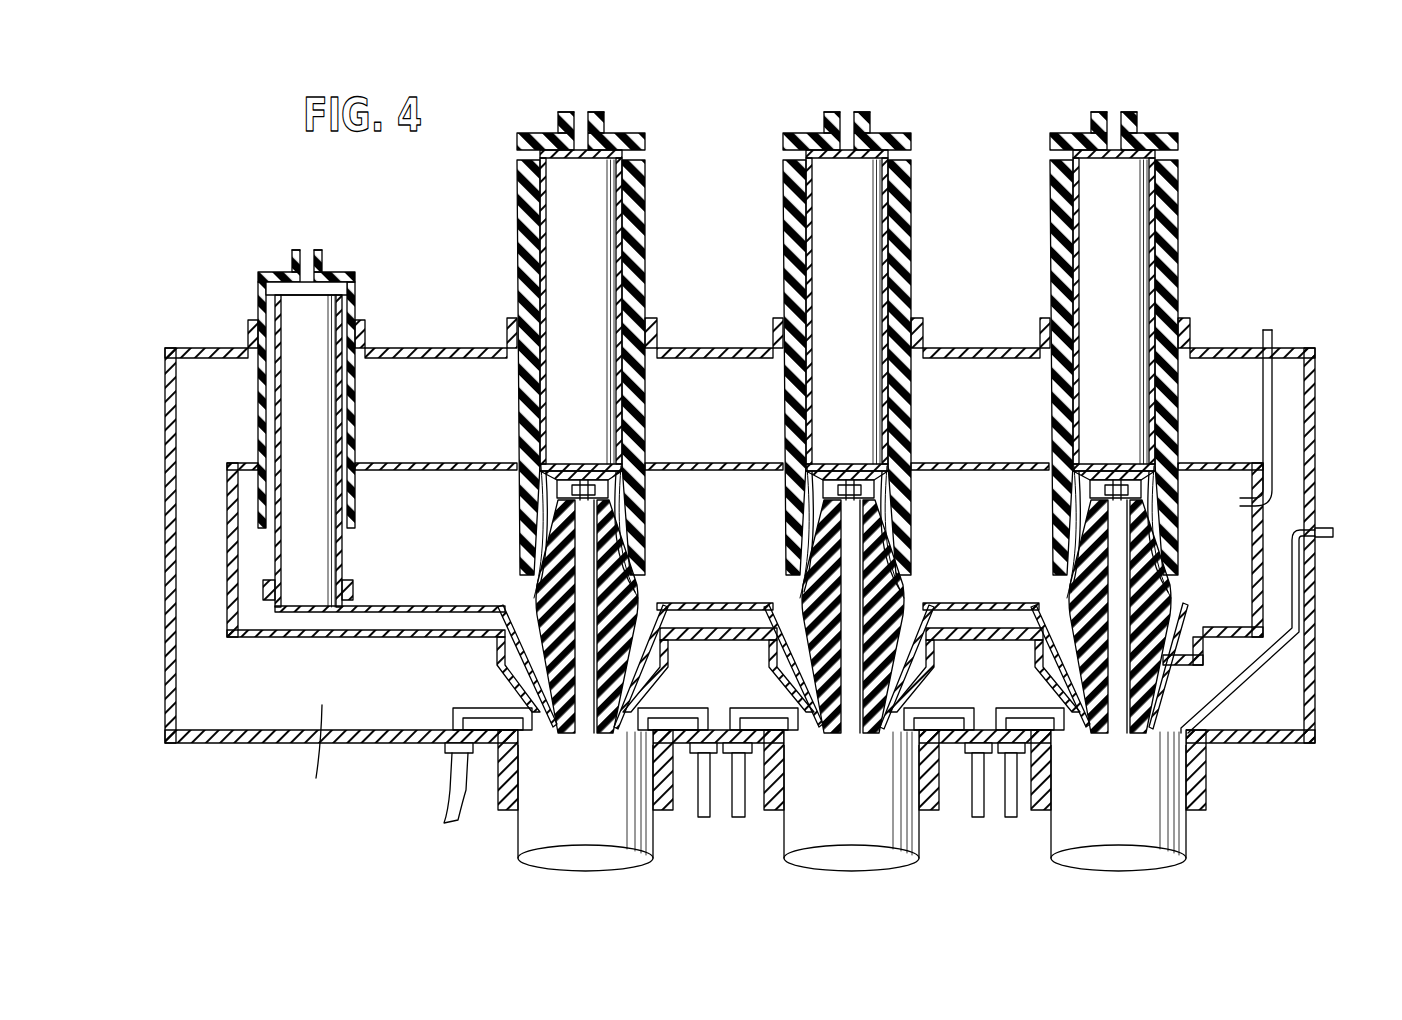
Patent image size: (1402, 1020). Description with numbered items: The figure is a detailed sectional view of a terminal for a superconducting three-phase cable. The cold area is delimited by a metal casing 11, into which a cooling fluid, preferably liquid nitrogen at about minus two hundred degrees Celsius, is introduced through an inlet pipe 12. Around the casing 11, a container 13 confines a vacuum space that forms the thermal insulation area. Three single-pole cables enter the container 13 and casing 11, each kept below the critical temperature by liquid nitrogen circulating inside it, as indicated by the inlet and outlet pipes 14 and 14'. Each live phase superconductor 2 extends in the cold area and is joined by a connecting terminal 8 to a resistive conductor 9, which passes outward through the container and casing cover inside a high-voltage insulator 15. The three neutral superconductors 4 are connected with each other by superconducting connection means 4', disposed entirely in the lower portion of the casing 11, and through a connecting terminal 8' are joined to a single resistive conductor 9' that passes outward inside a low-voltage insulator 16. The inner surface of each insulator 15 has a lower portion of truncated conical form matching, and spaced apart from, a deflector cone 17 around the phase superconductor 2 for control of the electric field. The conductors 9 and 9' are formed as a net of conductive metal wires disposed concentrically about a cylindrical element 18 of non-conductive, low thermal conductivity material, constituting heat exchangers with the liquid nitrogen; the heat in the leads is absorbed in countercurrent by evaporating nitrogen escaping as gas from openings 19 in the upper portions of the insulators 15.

The phase superconductor 2 is at (578, 533).
The neutral superconductor 4 is at (827, 666).
The superconducting connection means 4' is at (390, 584).
The connecting terminal 8 is at (849, 493).
The connecting terminal 8' is at (335, 575).
The resistive conductor 9 is at (847, 315).
The resistive conductor 9' is at (335, 449).
The casing 11 is at (232, 600).
The inlet pipe 12 is at (1270, 388).
The container 13 is at (175, 707).
The inlet pipe 14 is at (1162, 671).
The outlet pipe 14' is at (857, 803).
The high-voltage insulator 15 is at (647, 182).
The low-voltage insulator 16 is at (260, 298).
The deflector cone 17 is at (637, 592).
The cylindrical element 18 is at (303, 392).
The openings 19 is at (650, 153).